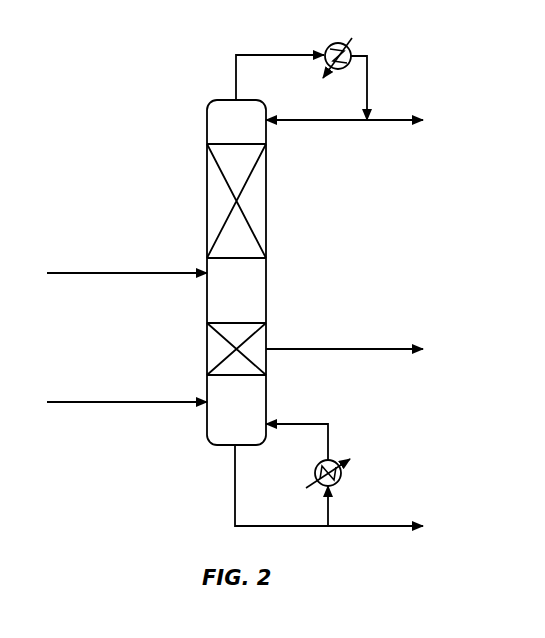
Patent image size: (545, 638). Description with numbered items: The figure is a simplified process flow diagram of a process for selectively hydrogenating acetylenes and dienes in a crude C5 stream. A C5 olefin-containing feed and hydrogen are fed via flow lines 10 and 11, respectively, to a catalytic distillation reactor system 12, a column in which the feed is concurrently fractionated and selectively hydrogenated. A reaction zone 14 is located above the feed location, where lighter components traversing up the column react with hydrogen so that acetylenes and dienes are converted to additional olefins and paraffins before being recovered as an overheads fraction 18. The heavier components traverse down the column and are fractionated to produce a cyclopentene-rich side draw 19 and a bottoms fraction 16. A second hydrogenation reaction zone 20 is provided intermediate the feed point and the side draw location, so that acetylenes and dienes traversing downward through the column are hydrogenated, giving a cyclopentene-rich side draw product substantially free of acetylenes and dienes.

The flow line 10 is at (122, 272).
The flow line 11 is at (122, 401).
The catalytic distillation reactor system 12 is at (207, 123).
The reaction zone 14 is at (215, 200).
The bottoms fraction 16 is at (380, 525).
The overheads fraction 18 is at (390, 120).
The cyclopentene-rich side draw 19 is at (333, 348).
The second hydrogenation reaction zone 20 is at (213, 348).